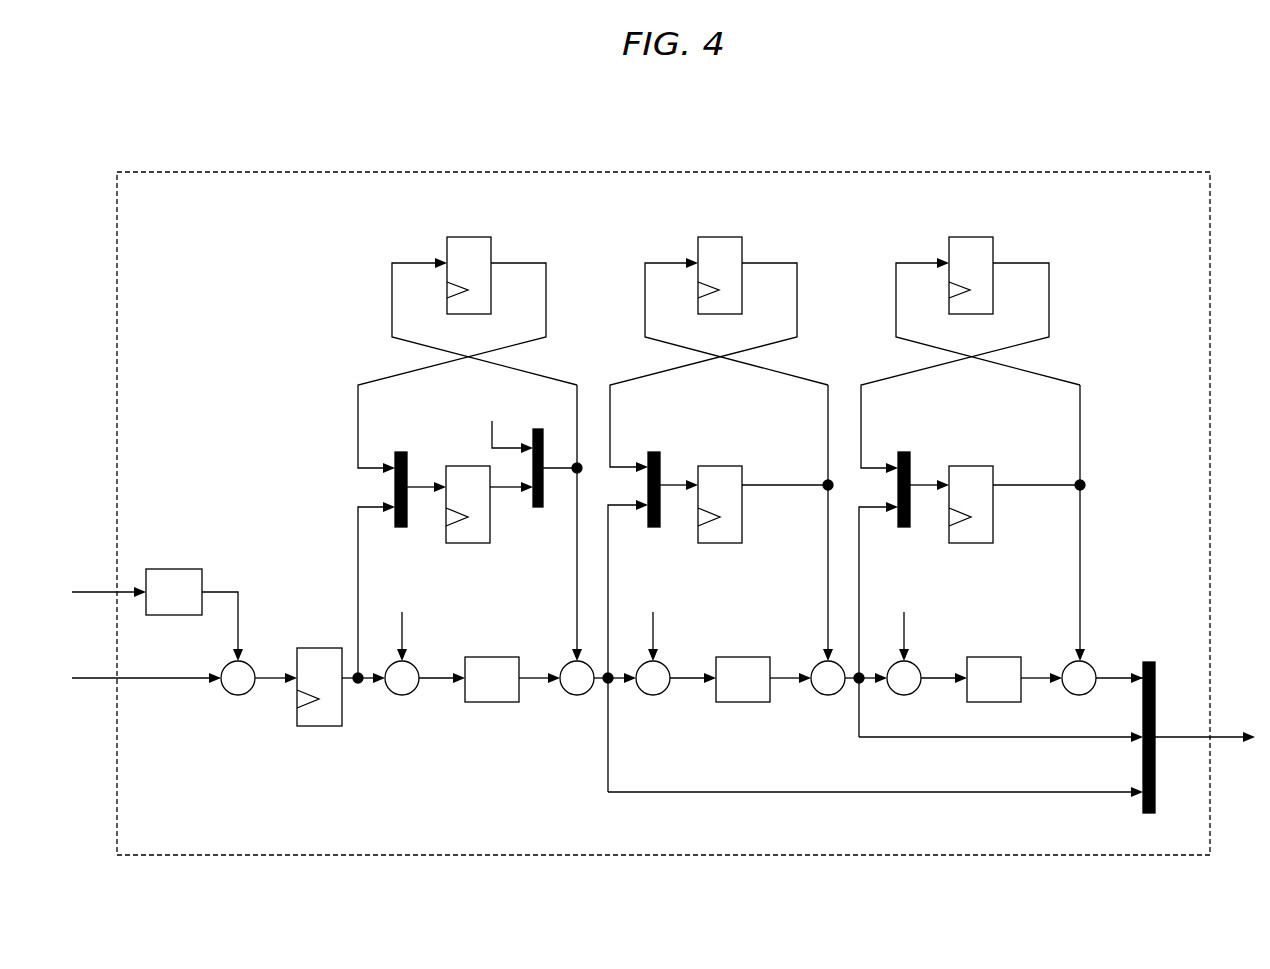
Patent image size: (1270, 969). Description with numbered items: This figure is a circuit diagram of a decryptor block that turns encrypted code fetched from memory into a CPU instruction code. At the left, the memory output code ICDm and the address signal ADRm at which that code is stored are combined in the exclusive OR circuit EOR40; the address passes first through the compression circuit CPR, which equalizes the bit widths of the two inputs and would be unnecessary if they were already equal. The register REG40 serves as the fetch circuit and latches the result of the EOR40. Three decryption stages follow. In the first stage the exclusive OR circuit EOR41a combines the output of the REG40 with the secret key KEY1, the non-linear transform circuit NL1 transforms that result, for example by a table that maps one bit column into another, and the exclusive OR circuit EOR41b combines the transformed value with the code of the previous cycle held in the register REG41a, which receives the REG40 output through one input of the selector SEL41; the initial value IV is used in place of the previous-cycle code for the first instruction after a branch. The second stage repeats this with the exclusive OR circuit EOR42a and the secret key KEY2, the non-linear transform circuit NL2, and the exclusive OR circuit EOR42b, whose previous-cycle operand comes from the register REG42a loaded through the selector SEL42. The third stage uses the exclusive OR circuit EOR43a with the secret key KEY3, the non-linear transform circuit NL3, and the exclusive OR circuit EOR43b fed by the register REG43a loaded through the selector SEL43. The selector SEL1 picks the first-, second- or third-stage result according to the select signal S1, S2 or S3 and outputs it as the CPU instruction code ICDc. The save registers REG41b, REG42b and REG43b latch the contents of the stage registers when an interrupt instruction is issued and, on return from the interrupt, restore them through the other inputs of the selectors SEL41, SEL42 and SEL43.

The address signal ADRm is at (91, 581).
The memory output code ICDm is at (133, 692).
The compression circuit CPR is at (174, 569).
The exclusive OR circuit EOR40 is at (252, 689).
The register REG40 is at (336, 700).
The save register REG41b is at (467, 341).
The selector SEL41 is at (402, 551).
The register REG41a is at (483, 519).
The initial value IV is at (532, 452).
The secret key KEY1 is at (403, 624).
The exclusive OR circuit EOR41a is at (415, 694).
The non-linear transform circuit NL1 is at (512, 666).
The exclusive OR circuit EOR41b is at (582, 556).
The save register REG42b is at (719, 341).
The selector SEL42 is at (653, 608).
The register REG42a is at (758, 519).
The secret key KEY2 is at (654, 624).
The exclusive OR circuit EOR42a is at (666, 694).
The non-linear transform circuit NL2 is at (763, 666).
The exclusive OR circuit EOR42b is at (833, 556).
The save register REG43b is at (970, 341).
The selector SEL43 is at (904, 581).
The register REG43a is at (1010, 519).
The secret key KEY3 is at (907, 624).
The exclusive OR circuit EOR43a is at (917, 694).
The non-linear transform circuit NL3 is at (1014, 666).
The exclusive OR circuit EOR43b is at (1086, 556).
The selector SEL1 is at (1146, 722).
The select signal S1 is at (875, 808).
The select signal S2 is at (1001, 752).
The select signal S3 is at (1129, 696).
The CPU instruction code ICDc is at (1211, 757).